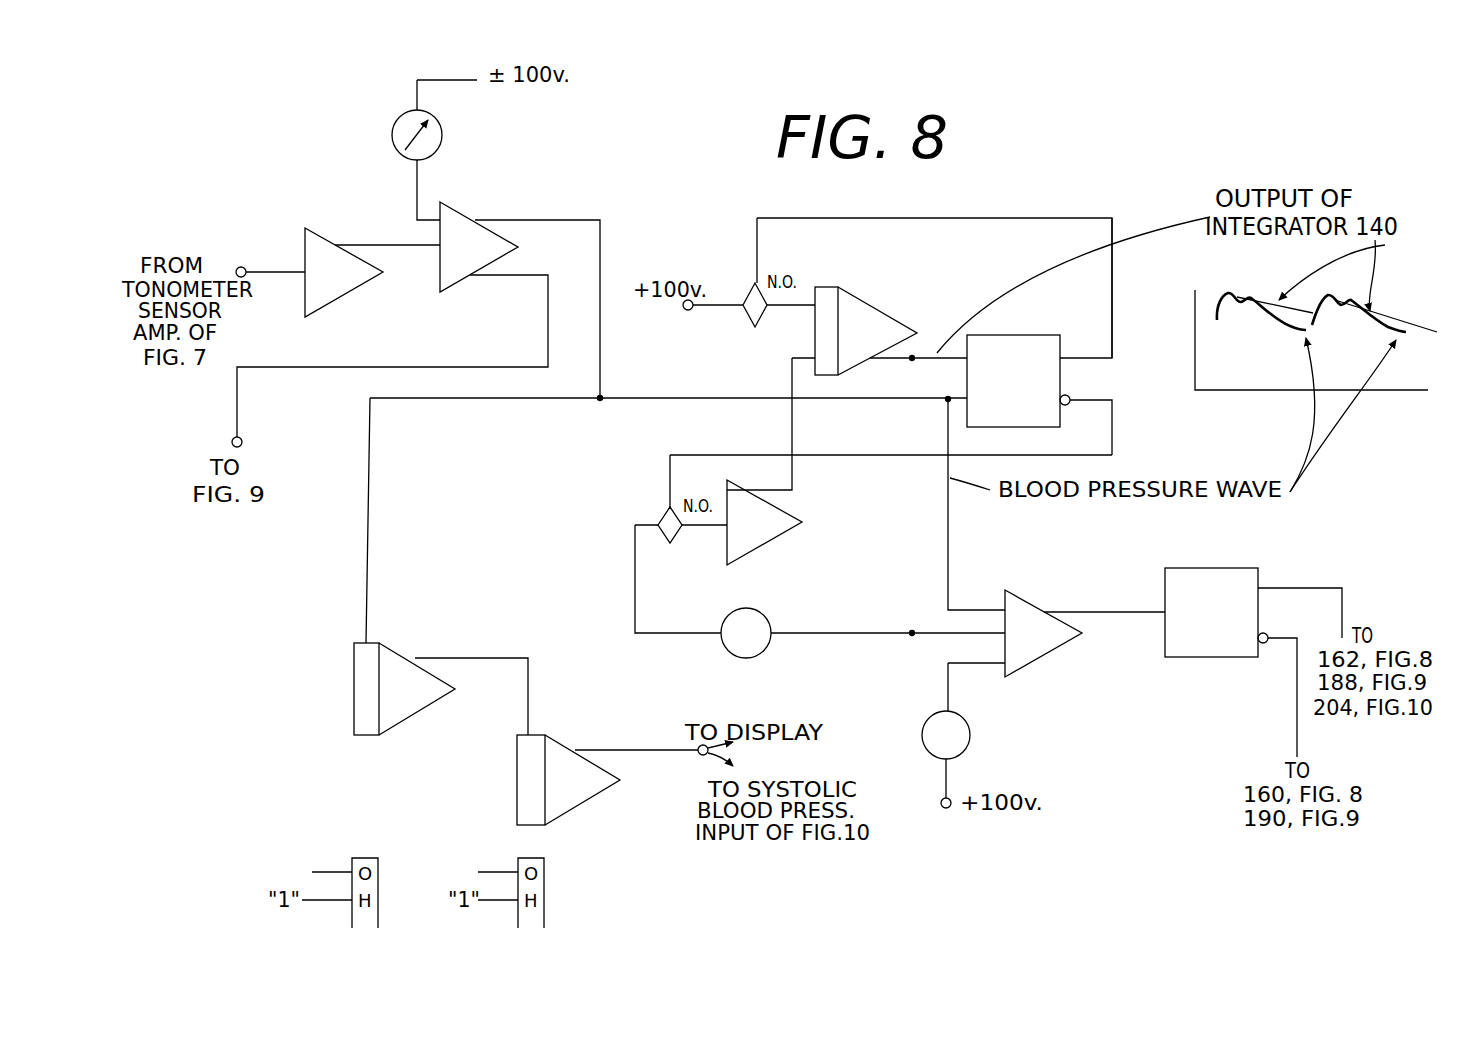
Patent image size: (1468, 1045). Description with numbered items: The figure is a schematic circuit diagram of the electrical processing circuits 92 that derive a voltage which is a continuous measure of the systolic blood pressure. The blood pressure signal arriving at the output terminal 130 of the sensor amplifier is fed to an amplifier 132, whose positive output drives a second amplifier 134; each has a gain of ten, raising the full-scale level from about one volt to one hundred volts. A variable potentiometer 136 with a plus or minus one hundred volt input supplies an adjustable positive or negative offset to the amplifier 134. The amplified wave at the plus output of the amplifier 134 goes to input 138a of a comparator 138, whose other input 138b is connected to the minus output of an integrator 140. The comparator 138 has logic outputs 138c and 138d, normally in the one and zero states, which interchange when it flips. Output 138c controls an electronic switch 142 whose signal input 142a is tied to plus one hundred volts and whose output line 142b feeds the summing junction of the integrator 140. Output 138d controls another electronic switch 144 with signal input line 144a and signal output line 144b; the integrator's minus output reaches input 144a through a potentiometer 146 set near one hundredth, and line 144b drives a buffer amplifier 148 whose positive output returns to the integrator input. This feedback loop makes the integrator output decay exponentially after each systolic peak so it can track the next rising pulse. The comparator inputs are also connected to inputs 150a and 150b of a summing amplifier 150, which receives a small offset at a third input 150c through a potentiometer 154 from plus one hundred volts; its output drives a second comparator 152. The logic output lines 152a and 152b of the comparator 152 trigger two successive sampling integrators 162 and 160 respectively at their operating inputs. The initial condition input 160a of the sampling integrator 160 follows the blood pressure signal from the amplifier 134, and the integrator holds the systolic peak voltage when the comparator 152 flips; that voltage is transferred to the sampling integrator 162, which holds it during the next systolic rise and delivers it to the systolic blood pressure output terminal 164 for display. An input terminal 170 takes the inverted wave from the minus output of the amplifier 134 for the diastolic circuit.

The electrical processing circuits 92 is at (1117, 190).
The output terminal 130 is at (243, 266).
The amplifier 132 is at (312, 230).
The second amplifier 134 is at (458, 206).
The variable potentiometer 136 is at (442, 135).
The comparator 138 is at (1005, 340).
The comparator input 138a is at (752, 400).
The comparator input 138b is at (892, 360).
The logic output 138c is at (1115, 278).
The logic output 138d is at (1113, 440).
The integrator 140 is at (862, 302).
The electronic switch 142 is at (748, 322).
The signal input 142a is at (720, 310).
The signal output line 142b is at (785, 310).
The electronic switch 144 is at (668, 540).
The signal input line 144a is at (658, 522).
The signal output line 144b is at (708, 530).
The potentiometer 146 is at (746, 658).
The amplifier 148 is at (778, 540).
The summing amplifier 150 is at (1020, 610).
The amplifier input 150a is at (965, 612).
The amplifier input 150b is at (932, 638).
The third input 150c is at (976, 668).
The second comparator 152 is at (1200, 567).
The logic output line 152a is at (1285, 586).
The logic output line 152b is at (1300, 657).
The potentiometer 154 is at (970, 750).
The sampling integrator 160 is at (388, 650).
The initial condition input 160a is at (370, 528).
The sampling integrator 162 is at (562, 740).
The systolic blood pressure output terminal 164 is at (700, 753).
The input terminal 170 is at (232, 440).